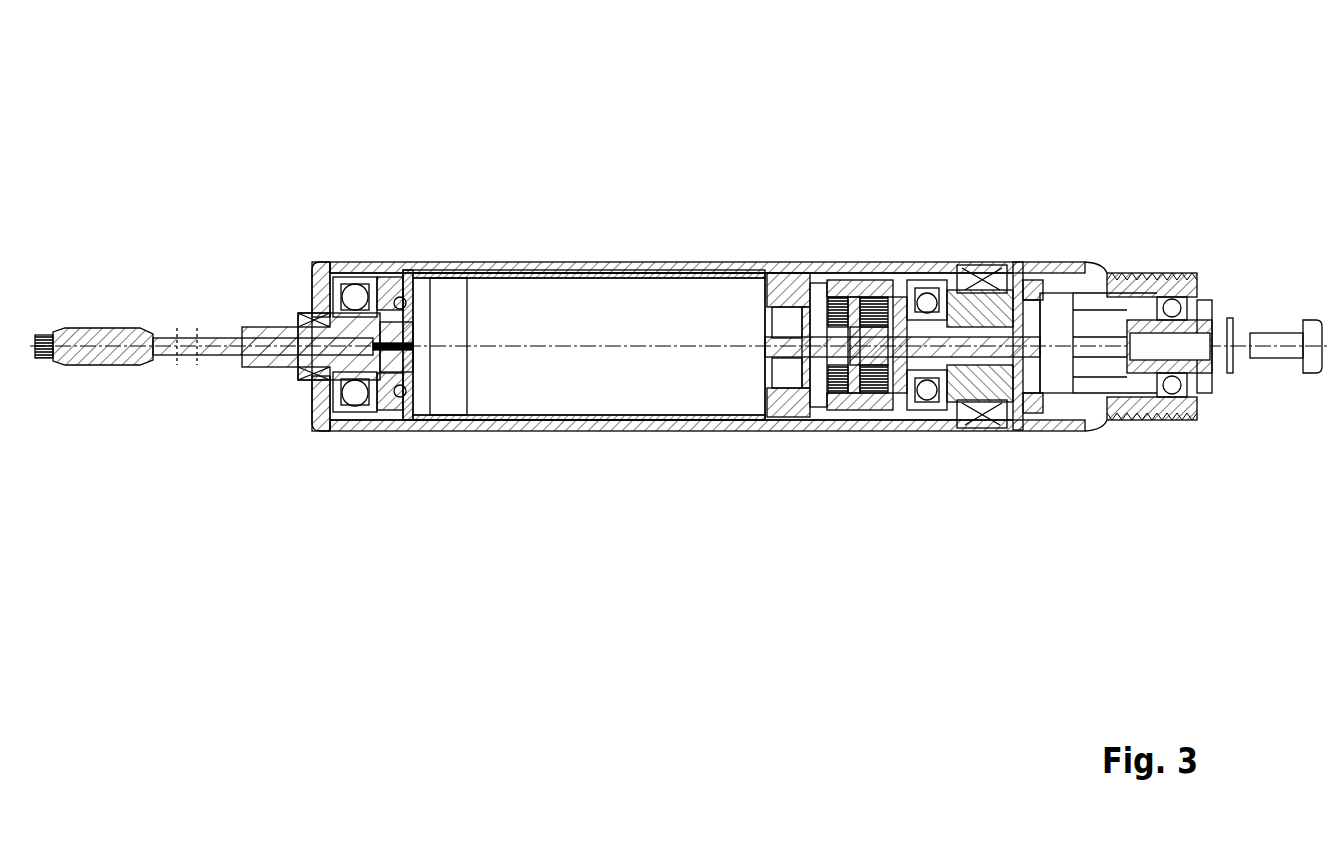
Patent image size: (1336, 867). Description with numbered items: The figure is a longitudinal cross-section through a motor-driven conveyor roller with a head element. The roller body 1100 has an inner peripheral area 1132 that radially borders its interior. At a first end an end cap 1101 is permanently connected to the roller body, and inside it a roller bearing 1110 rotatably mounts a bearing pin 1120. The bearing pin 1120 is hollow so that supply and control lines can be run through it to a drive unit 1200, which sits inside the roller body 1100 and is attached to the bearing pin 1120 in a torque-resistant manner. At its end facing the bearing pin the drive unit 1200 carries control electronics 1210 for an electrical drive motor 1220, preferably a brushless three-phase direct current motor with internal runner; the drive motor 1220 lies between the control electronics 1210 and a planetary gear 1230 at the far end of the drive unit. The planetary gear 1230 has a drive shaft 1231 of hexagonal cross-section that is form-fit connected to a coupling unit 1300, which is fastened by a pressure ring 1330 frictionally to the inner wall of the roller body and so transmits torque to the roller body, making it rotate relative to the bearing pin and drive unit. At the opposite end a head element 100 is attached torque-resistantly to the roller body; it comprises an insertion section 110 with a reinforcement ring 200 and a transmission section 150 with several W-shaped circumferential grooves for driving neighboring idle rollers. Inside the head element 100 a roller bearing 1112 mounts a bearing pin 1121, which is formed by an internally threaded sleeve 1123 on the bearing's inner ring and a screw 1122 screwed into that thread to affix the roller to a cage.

The head element 100 is at (1118, 242).
The insertion section 110 is at (1082, 438).
The transmission section 150 is at (1188, 430).
The reinforcement ring 200 is at (1070, 392).
The roller body 1100 is at (478, 262).
The end cap 1101 is at (325, 266).
The roller bearing 1110 is at (360, 292).
The roller bearing 1112 is at (1175, 300).
The bearing pin 1120 is at (288, 327).
The bearing pin 1121 is at (1255, 215).
The screw 1122 is at (1278, 338).
The sleeve 1123 is at (1200, 372).
The inner peripheral area 1132 is at (685, 280).
The drive unit 1200 is at (598, 492).
The control electronics 1210 is at (440, 402).
The electrical drive motor 1220 is at (540, 392).
The planetary gear 1230 is at (858, 350).
The drive shaft 1231 is at (945, 347).
The coupling unit 1300 is at (900, 492).
The pressure ring 1330 is at (985, 268).